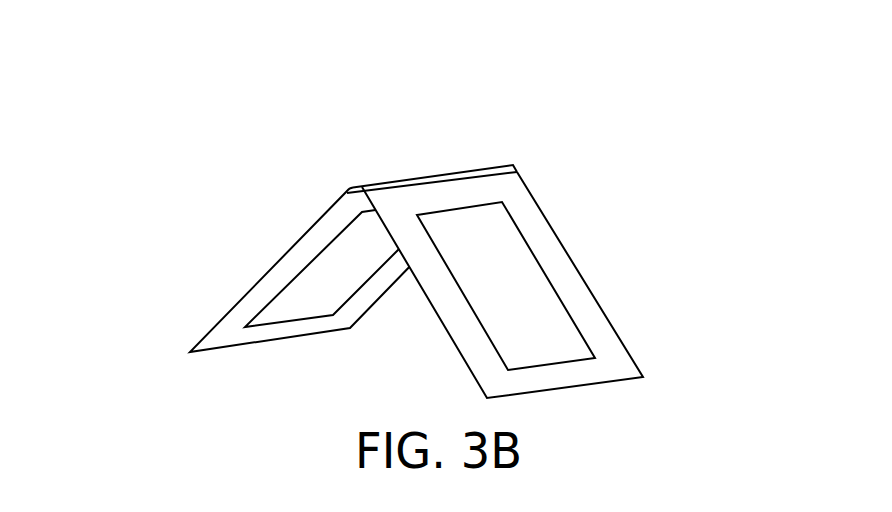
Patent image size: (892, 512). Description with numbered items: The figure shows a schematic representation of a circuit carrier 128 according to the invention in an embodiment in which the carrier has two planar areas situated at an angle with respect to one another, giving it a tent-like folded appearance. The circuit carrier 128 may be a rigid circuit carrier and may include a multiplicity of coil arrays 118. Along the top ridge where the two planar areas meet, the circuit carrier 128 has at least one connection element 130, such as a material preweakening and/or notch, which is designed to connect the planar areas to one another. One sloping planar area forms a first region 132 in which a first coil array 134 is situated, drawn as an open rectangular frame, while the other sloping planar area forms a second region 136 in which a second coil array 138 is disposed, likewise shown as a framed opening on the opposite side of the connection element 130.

The circuit carrier 128 is at (413, 126).
The connection element 130 is at (513, 165).
The coil arrays 118 is at (417, 248).
The first region 132 is at (561, 285).
The first coil array 134 is at (557, 296).
The second region 136 is at (242, 270).
The second coil array 138 is at (281, 293).